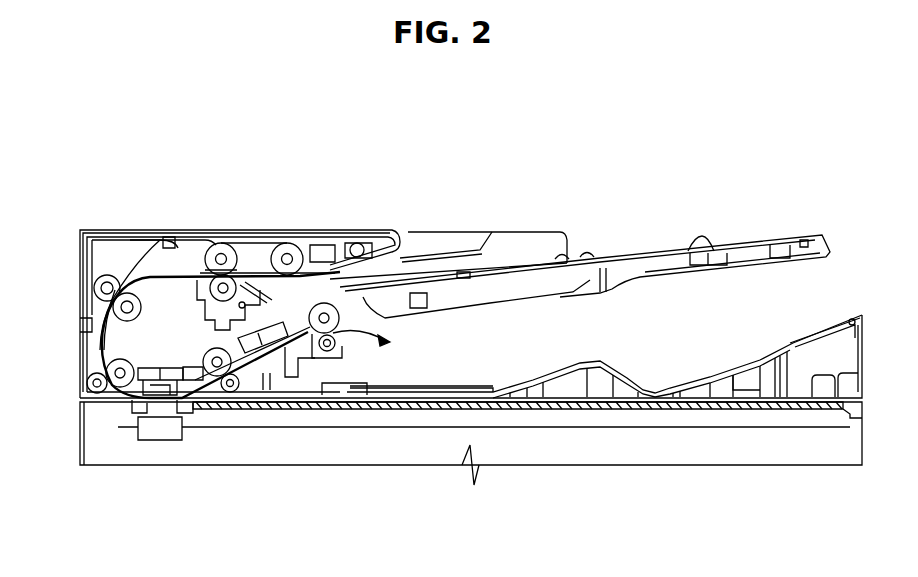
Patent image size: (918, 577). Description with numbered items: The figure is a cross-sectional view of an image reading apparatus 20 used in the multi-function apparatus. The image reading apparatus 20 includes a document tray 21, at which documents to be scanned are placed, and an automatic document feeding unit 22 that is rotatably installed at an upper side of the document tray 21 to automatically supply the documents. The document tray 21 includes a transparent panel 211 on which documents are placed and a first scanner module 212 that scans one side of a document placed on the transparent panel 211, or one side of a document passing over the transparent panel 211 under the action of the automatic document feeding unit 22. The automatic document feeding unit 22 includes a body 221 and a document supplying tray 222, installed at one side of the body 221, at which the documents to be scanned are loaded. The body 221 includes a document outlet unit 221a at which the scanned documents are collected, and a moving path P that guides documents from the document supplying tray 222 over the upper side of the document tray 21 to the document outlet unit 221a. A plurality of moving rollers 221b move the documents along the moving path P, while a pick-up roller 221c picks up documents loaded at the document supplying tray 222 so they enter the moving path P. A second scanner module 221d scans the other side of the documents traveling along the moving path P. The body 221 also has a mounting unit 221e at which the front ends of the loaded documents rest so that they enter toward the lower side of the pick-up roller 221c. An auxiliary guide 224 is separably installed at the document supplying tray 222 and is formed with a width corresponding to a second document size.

The image reading apparatus 20 is at (447, 130).
The document tray 21 is at (80, 432).
The automatic document feeding unit 22 is at (80, 292).
The body 221 is at (181, 228).
The document outlet unit 221a is at (449, 387).
The moving rollers 221b is at (98, 327).
The pick-up roller 221c is at (277, 243).
The second scanner module 221d is at (263, 407).
The mounting unit 221e is at (336, 298).
The document supplying tray 222 is at (667, 252).
The auxiliary guide 224 is at (508, 242).
The transparent panel 211 is at (198, 412).
The first scanner module 212 is at (143, 440).
The moving path P is at (160, 275).